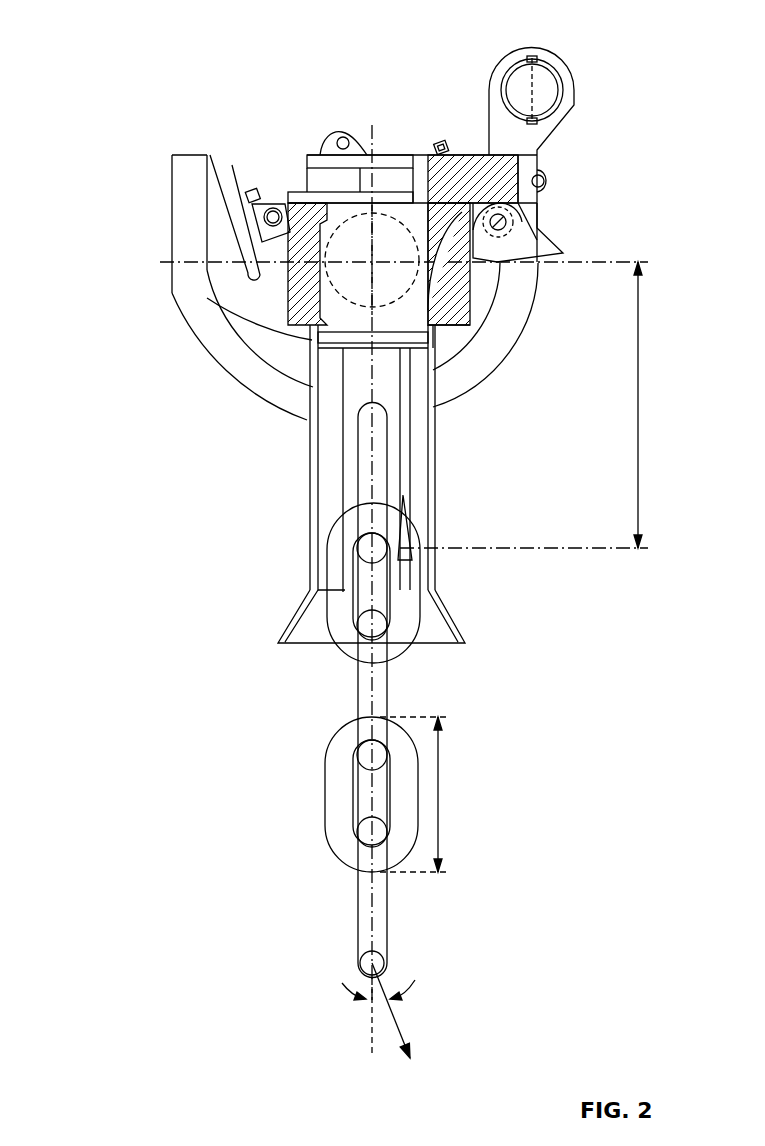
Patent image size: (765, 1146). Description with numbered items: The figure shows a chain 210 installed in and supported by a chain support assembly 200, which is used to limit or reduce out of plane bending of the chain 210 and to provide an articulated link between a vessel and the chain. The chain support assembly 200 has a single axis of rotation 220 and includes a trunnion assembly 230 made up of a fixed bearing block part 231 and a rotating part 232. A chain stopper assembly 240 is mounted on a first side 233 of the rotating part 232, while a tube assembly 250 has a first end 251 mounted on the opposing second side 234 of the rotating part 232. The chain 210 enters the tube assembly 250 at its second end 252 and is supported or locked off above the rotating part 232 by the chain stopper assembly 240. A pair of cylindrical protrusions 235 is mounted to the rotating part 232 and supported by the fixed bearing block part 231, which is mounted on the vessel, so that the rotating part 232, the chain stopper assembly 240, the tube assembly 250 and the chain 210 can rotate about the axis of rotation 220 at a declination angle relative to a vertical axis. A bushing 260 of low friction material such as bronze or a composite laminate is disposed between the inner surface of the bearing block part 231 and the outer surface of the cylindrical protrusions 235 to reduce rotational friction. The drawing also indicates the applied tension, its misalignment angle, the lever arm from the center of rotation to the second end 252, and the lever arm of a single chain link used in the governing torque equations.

The chain support assembly 200 is at (150, 52).
The chain 210 is at (325, 823).
The axis of rotation 220 is at (290, 341).
The trunnion assembly 230 is at (525, 350).
The fixed bearing block part 231 is at (538, 288).
The rotating part 232 is at (458, 327).
The first side 233 is at (283, 192).
The second side 234 is at (438, 327).
The cylindrical protrusions 235 is at (360, 277).
The chain stopper assembly 240 is at (300, 178).
The tube assembly 250 is at (312, 532).
The first end 251 is at (260, 383).
The second end 252 is at (457, 643).
The bushing 260 is at (387, 213).